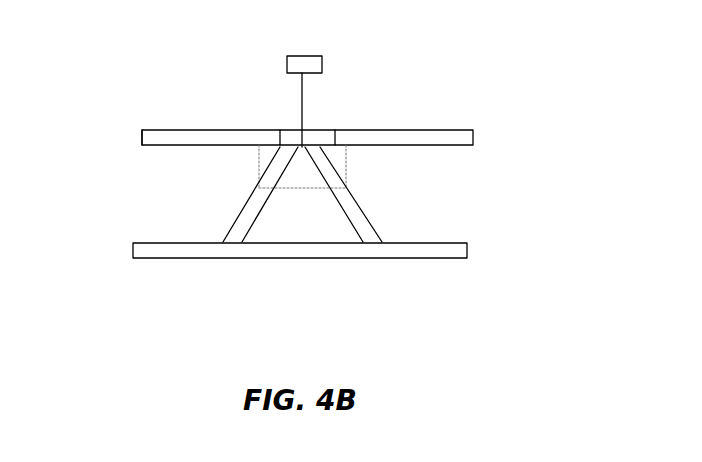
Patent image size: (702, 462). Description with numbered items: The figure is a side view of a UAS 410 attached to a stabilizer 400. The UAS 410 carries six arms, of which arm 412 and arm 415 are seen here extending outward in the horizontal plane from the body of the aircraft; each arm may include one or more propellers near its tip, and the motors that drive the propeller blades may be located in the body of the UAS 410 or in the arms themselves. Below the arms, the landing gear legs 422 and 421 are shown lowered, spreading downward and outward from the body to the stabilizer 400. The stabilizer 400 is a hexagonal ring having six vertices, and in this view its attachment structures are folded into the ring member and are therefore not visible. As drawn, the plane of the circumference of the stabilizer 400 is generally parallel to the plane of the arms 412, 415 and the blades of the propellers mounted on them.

The stabilizer 400 is at (467, 258).
The UAS 410 is at (315, 130).
The arm 412 is at (463, 130).
The arm 415 is at (150, 130).
The landing gear leg 421 is at (362, 208).
The landing gear leg 422 is at (242, 207).